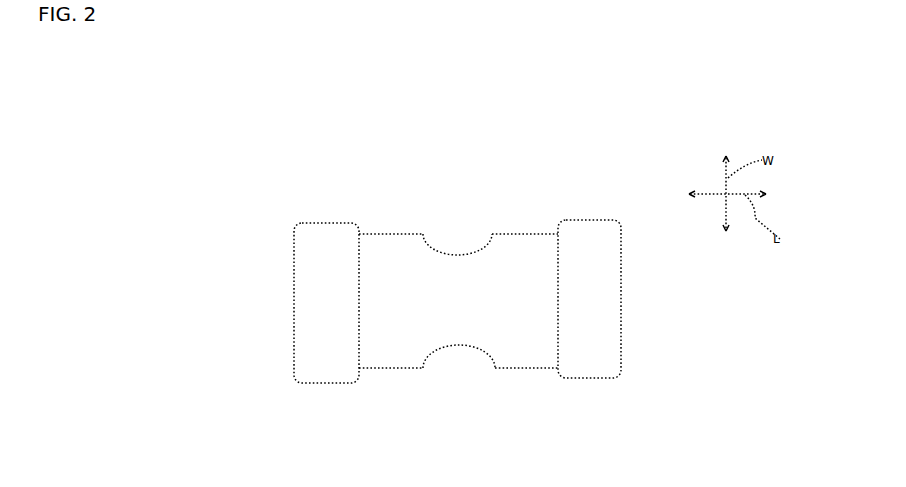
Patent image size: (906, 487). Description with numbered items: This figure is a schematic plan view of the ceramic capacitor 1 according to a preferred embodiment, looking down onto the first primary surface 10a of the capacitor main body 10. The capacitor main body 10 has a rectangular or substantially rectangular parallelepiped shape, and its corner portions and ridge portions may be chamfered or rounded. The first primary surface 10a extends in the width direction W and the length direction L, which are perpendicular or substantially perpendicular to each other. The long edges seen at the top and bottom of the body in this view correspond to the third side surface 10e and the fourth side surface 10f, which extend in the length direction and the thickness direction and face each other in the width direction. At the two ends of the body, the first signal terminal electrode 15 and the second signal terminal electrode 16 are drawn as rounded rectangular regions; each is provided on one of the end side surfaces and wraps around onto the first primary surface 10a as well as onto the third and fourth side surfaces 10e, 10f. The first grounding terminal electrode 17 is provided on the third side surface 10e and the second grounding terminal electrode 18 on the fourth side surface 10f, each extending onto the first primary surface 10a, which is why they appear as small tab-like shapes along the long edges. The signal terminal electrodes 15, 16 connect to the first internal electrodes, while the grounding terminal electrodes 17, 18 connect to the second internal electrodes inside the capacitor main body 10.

The ceramic capacitor 1 is at (452, 293).
The capacitor main body 10 is at (462, 293).
The first primary surface 10a is at (527, 232).
The third side surface 10e is at (393, 232).
The fourth side surface 10f is at (390, 370).
The first signal terminal electrode 15 is at (293, 338).
The second signal terminal electrode 16 is at (622, 341).
The first grounding terminal electrode 17 is at (436, 230).
The second grounding terminal electrode 18 is at (441, 372).